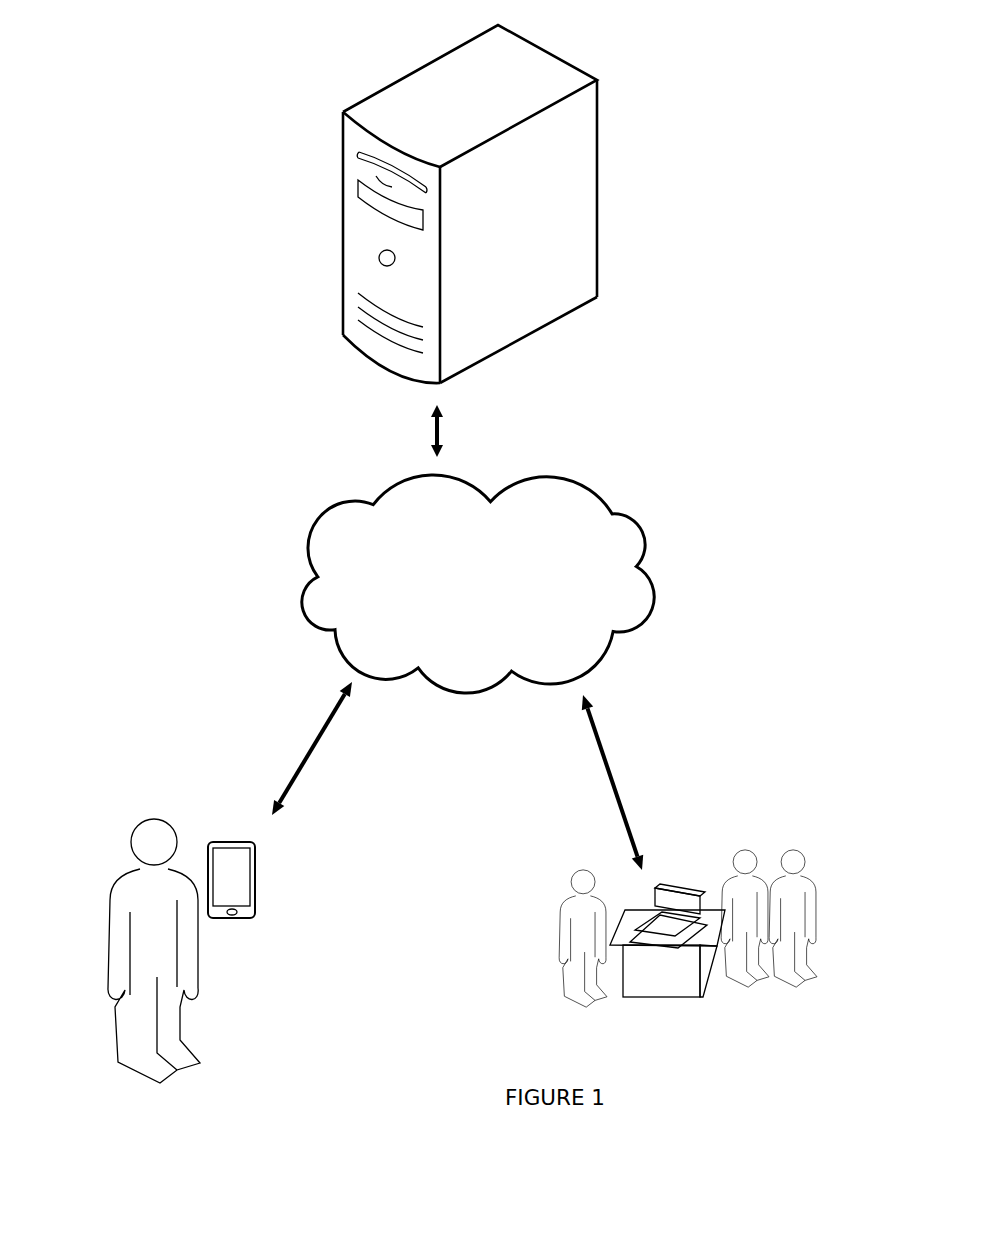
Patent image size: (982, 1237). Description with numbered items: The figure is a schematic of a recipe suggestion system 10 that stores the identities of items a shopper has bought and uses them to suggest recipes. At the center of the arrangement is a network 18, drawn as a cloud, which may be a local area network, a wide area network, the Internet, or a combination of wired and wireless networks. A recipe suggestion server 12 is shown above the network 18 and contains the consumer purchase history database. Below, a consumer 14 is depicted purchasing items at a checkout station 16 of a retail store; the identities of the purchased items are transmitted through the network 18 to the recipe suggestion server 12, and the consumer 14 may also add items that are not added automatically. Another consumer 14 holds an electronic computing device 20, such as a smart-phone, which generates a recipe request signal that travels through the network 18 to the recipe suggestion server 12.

The recipe suggestion system 10 is at (133, 133).
The recipe suggestion server 12 is at (567, 176).
The consumer 14 is at (127, 895).
The checkout station 16 is at (713, 787).
The network 18 is at (330, 512).
The electronic computing device 20 is at (223, 862).